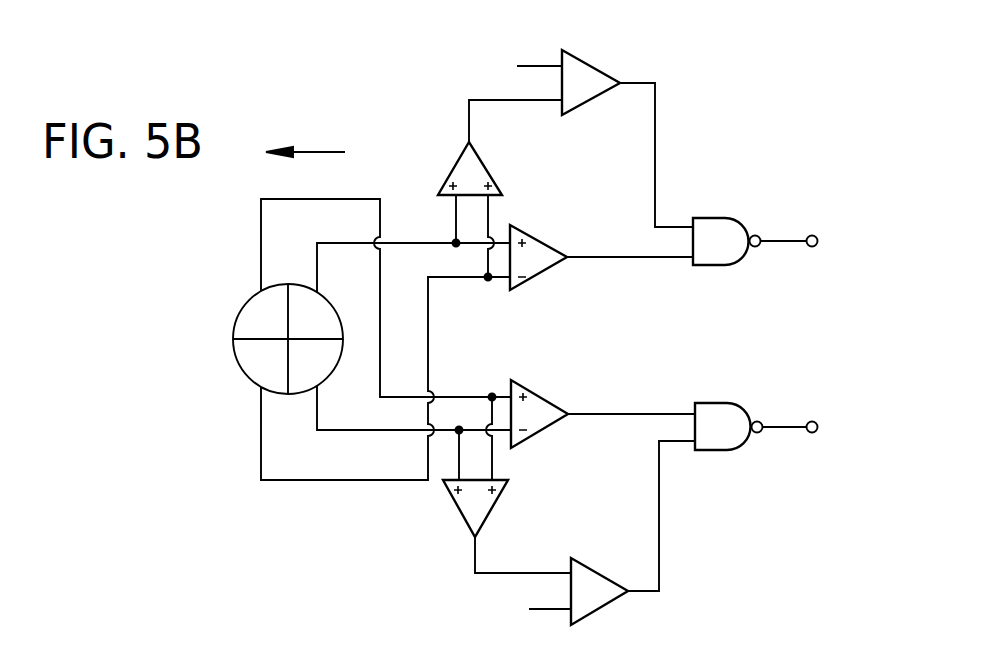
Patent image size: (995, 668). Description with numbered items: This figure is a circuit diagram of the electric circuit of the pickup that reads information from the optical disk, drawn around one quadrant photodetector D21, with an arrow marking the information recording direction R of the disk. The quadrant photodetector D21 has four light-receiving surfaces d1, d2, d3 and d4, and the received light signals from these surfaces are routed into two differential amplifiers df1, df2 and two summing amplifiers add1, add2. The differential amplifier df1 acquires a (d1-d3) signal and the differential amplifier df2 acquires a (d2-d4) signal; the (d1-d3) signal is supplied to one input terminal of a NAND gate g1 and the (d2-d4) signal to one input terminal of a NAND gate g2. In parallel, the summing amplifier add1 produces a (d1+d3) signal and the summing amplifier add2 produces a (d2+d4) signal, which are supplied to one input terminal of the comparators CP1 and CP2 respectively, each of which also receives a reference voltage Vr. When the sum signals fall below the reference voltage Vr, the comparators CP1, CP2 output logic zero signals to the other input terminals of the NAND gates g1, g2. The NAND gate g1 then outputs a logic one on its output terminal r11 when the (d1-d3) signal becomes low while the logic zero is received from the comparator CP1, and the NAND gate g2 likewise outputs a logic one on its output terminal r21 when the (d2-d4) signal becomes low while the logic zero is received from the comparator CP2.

The quadrant photodetector D21 is at (266, 328).
The light-receiving surface d1 is at (315, 311).
The light-receiving surface d2 is at (260, 311).
The light-receiving surface d3 is at (260, 366).
The light-receiving surface d4 is at (315, 366).
The summing amplifier add1 is at (483, 165).
The summing amplifier add2 is at (534, 571).
The differential amplifier df1 is at (538, 247).
The differential amplifier df2 is at (533, 406).
The comparator CP1 is at (588, 76).
The comparator CP2 is at (603, 588).
The NAND gate g1 is at (713, 229).
The NAND gate g2 is at (723, 413).
The output terminal r11 is at (833, 240).
The output terminal r21 is at (834, 425).
The reference voltage Vr is at (526, 339).
The information recording direction R is at (305, 140).